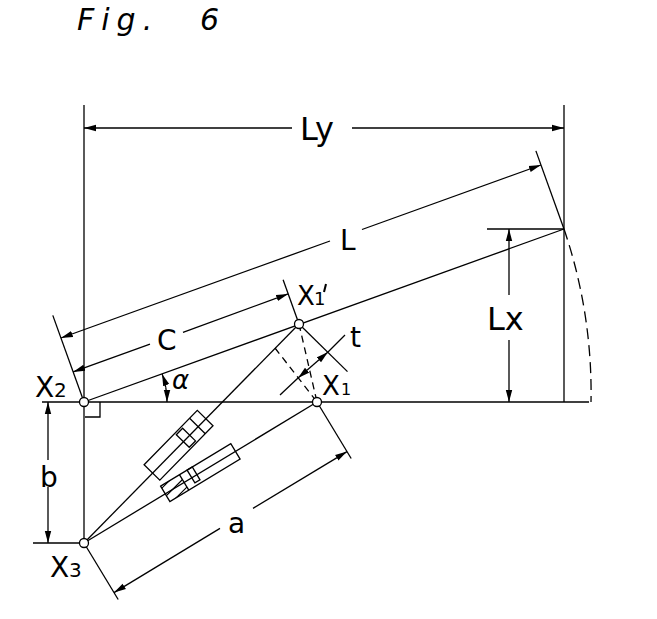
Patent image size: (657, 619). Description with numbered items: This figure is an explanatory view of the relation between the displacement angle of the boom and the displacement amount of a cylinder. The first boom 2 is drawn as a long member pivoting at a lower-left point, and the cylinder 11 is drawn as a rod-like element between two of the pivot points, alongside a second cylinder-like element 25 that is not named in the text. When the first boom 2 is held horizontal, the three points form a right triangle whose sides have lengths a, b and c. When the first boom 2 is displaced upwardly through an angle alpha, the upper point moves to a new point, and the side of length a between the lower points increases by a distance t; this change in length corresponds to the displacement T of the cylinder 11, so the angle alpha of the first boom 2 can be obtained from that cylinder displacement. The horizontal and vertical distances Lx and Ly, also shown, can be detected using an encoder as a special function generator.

The first boom 2 is at (420, 282).
The cylinder 11 is at (158, 445).
The second tool 25 is at (168, 500).